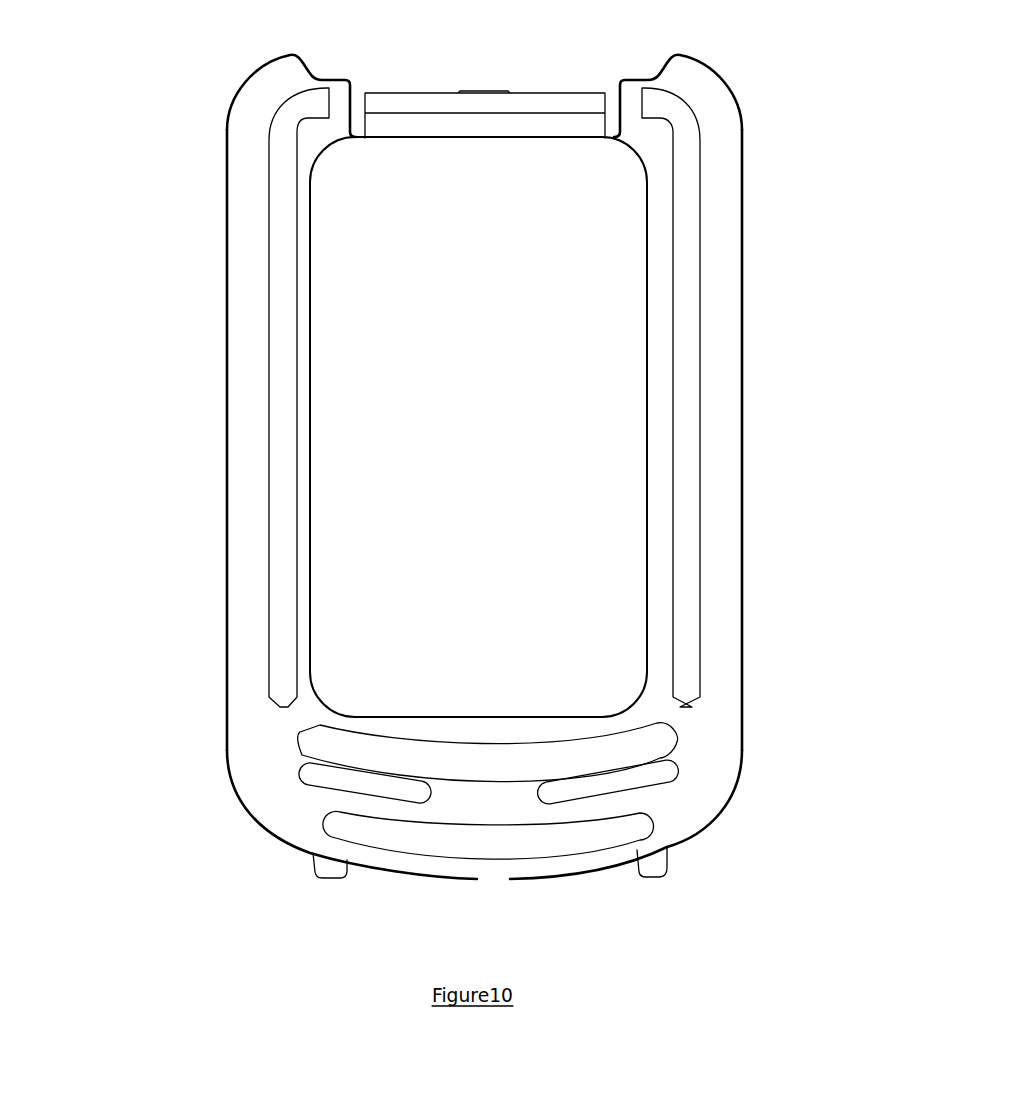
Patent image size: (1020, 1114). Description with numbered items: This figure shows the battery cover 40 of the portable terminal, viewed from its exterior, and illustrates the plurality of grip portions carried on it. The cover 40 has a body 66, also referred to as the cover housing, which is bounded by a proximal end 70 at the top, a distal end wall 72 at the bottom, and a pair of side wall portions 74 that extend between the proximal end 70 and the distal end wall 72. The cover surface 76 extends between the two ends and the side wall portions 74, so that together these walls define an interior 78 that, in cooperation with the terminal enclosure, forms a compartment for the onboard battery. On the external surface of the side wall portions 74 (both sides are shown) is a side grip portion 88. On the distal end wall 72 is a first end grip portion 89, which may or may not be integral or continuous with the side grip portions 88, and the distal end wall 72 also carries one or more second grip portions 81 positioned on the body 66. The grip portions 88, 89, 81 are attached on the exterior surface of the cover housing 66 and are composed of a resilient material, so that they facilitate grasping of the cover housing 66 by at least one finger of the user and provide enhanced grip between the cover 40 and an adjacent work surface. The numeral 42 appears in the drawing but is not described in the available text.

The cover 40 is at (112, 75).
The housing 42 is at (732, 777).
The body 66 is at (735, 255).
The proximal end 70 is at (660, 39).
The distal end wall 72 is at (228, 873).
The side wall portions 74 is at (240, 315).
The cover surface 76 is at (472, 431).
The interior 78 is at (273, 452).
The second grip portions 81 is at (405, 792).
The side grip portion 88 is at (686, 461).
The first end grip portion 89 is at (522, 767).